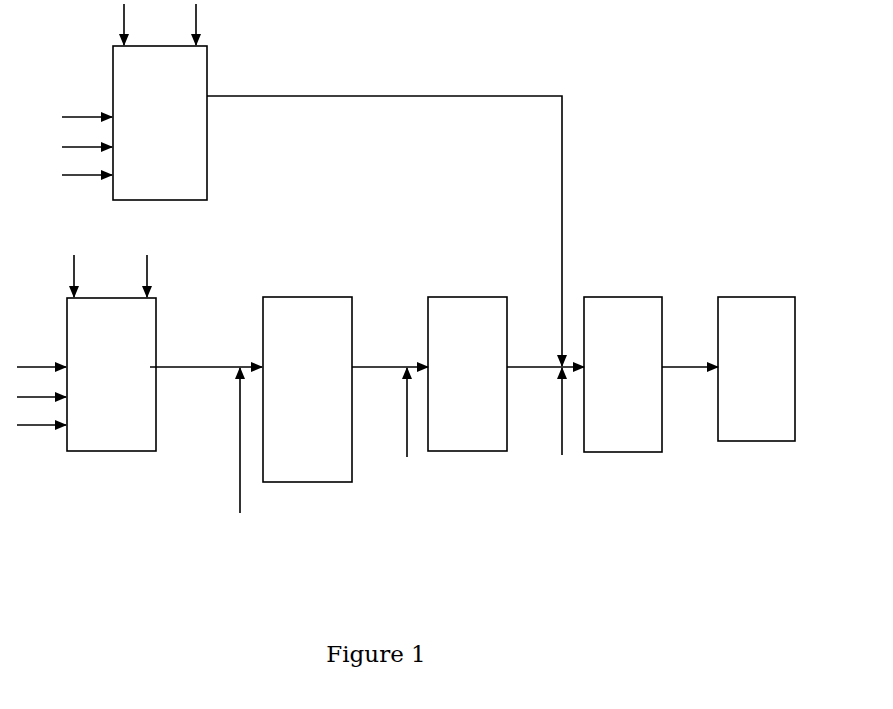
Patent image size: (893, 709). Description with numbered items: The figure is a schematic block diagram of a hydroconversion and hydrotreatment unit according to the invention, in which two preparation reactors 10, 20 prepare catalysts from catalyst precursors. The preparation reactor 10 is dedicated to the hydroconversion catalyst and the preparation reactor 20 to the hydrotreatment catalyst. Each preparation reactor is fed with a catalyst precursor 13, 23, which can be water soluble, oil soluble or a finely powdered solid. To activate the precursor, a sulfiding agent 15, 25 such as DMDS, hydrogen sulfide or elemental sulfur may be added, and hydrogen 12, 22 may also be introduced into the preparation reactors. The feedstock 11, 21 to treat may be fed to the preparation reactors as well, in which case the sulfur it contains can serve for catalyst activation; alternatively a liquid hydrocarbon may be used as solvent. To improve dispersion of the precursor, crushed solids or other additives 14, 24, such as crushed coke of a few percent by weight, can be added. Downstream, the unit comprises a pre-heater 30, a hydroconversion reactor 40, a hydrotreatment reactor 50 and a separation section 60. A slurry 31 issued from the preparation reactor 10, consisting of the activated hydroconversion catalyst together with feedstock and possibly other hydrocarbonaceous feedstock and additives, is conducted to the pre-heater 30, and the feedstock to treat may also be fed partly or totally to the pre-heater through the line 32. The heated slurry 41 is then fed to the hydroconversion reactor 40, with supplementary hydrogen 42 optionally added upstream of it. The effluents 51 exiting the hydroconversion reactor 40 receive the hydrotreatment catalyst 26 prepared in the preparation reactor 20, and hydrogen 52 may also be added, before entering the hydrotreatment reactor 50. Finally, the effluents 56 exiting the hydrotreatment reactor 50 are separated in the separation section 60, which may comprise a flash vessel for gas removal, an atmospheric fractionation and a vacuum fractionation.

The preparation reactor 10 is at (111, 374).
The feedstock 11 is at (41, 351).
The hydrogen 12 is at (41, 386).
The catalyst precursor 13 is at (55, 276).
The crushed solids or other additives 14 is at (130, 276).
The sulfiding agent 15 is at (41, 417).
The preparation reactor 20 is at (160, 123).
The feedstock 21 is at (87, 103).
The hydrogen 22 is at (87, 132).
The catalyst precursor 23 is at (111, 24).
The crushed solids or other additives 24 is at (209, 24).
The sulfiding agent 25 is at (87, 161).
The hydrotreatment catalyst 26 is at (384, 221).
The pre-heater 30 is at (307, 389).
The slurry 31 is at (206, 356).
The line 32 is at (237, 452).
The hydroconversion reactor 40 is at (467, 374).
The heated slurry 41 is at (390, 356).
The supplementary hydrogen 42 is at (391, 418).
The hydrotreatment reactor 50 is at (623, 374).
The effluents 51 is at (545, 356).
The hydrogen 52 is at (546, 418).
The effluents 56 is at (690, 356).
The separation section 60 is at (756, 369).